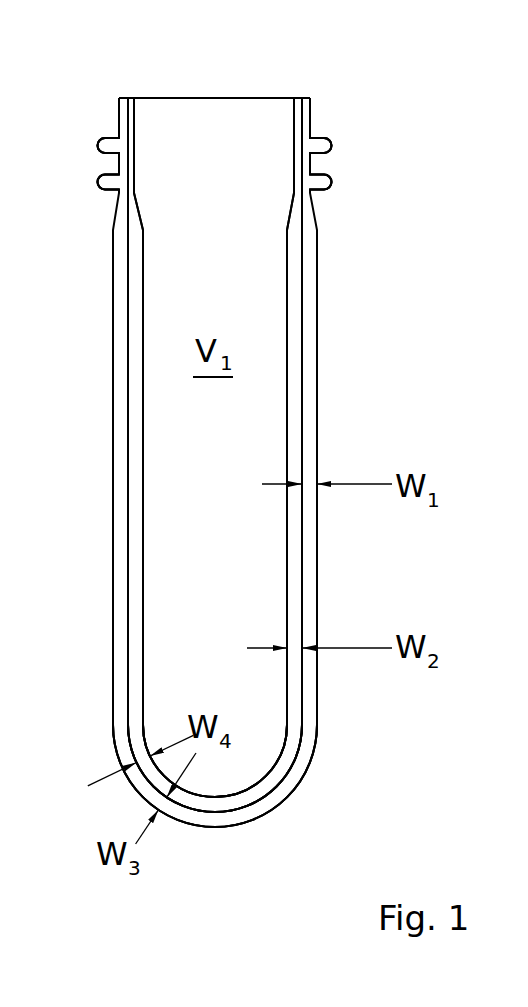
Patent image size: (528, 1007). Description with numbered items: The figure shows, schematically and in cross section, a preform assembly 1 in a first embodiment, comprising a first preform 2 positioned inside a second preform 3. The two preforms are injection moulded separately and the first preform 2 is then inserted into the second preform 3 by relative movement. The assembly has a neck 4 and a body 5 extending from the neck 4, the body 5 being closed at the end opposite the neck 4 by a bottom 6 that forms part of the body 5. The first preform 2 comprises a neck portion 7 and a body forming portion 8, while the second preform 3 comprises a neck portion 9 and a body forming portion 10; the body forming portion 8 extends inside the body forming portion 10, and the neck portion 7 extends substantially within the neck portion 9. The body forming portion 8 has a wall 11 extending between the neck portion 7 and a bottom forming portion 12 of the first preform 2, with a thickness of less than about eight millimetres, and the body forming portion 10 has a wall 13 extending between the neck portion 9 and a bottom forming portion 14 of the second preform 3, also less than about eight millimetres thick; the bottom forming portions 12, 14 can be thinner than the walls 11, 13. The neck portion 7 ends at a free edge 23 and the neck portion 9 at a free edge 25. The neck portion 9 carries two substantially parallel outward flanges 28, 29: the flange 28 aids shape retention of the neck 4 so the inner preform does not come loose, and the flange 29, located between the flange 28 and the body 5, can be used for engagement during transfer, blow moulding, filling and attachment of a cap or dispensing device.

The preform assembly 1 is at (313, 96).
The first preform 2 is at (242, 97).
The second preform 3 is at (340, 279).
The neck 4 is at (337, 164).
The body 5 is at (340, 442).
The bottom 6 is at (252, 827).
The neck portion 7 is at (258, 128).
The body forming portion 8 is at (249, 407).
The neck portion 9 is at (312, 120).
The body forming portion 10 is at (318, 560).
The wall 11 is at (310, 339).
The bottom forming portion 12 is at (298, 767).
The wall 13 is at (294, 610).
The bottom forming portion 14 is at (272, 779).
The free edge 23 is at (133, 95).
The free edge 25 is at (122, 95).
The flange 28 is at (325, 146).
The flange 29 is at (325, 182).